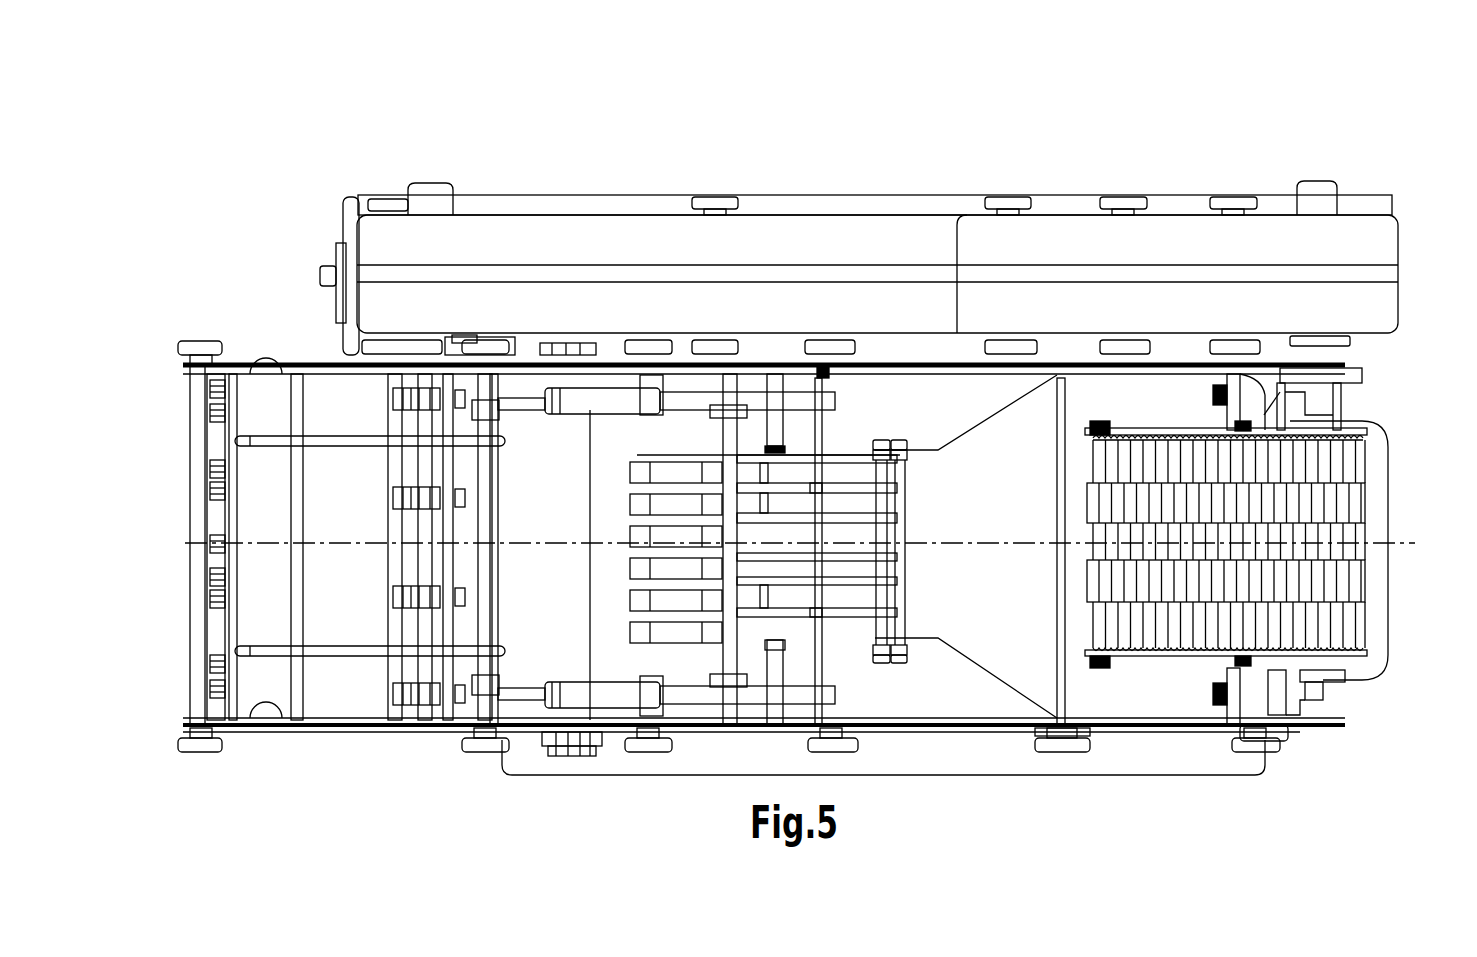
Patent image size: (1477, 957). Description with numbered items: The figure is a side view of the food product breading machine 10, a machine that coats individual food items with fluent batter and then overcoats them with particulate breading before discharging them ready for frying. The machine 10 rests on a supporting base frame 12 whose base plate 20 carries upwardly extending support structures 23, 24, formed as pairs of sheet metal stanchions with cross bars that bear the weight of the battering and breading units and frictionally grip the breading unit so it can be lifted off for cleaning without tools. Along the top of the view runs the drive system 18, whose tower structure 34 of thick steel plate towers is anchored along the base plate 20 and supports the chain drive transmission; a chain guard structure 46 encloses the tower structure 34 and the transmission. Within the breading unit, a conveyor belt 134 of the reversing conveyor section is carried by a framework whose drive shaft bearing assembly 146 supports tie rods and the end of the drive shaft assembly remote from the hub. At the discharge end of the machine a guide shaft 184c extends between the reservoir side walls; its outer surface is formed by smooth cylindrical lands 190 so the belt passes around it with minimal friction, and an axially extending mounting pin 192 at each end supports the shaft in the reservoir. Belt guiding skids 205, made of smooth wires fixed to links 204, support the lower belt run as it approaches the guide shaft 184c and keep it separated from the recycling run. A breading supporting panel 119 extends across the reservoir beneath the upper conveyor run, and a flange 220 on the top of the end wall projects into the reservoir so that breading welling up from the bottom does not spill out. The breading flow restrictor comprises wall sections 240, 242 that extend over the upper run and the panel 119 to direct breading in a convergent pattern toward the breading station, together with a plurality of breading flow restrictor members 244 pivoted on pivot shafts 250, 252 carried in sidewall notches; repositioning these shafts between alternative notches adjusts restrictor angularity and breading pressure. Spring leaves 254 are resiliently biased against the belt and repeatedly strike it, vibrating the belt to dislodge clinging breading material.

The food product breading machine 10 is at (910, 175).
The base frame 12 is at (1128, 755).
The drive system 18 is at (1398, 248).
The base plate 20 is at (957, 750).
The support structure 23 is at (573, 757).
The support structure 24 is at (1070, 745).
The tower structure 34 is at (647, 260).
The chain guard structure 46 is at (1197, 258).
The breading supporting panel 119 is at (915, 690).
The conveyor belt 134 is at (1308, 617).
The drive shaft bearing assembly 146 is at (1322, 672).
The guide shaft 184c is at (215, 452).
The cylindrical lands 190 is at (220, 556).
The mounting pin 192 is at (430, 337).
The links 204 is at (255, 372).
The belt guiding skids 205 is at (312, 652).
The flange 220 is at (1265, 395).
The wall section 240 is at (985, 665).
The wall section 242 is at (980, 425).
The breading flow restrictor members 244 is at (865, 535).
The pivot shaft 250 is at (878, 440).
The pivot shaft 252 is at (898, 440).
The spring leaves 254 is at (575, 398).